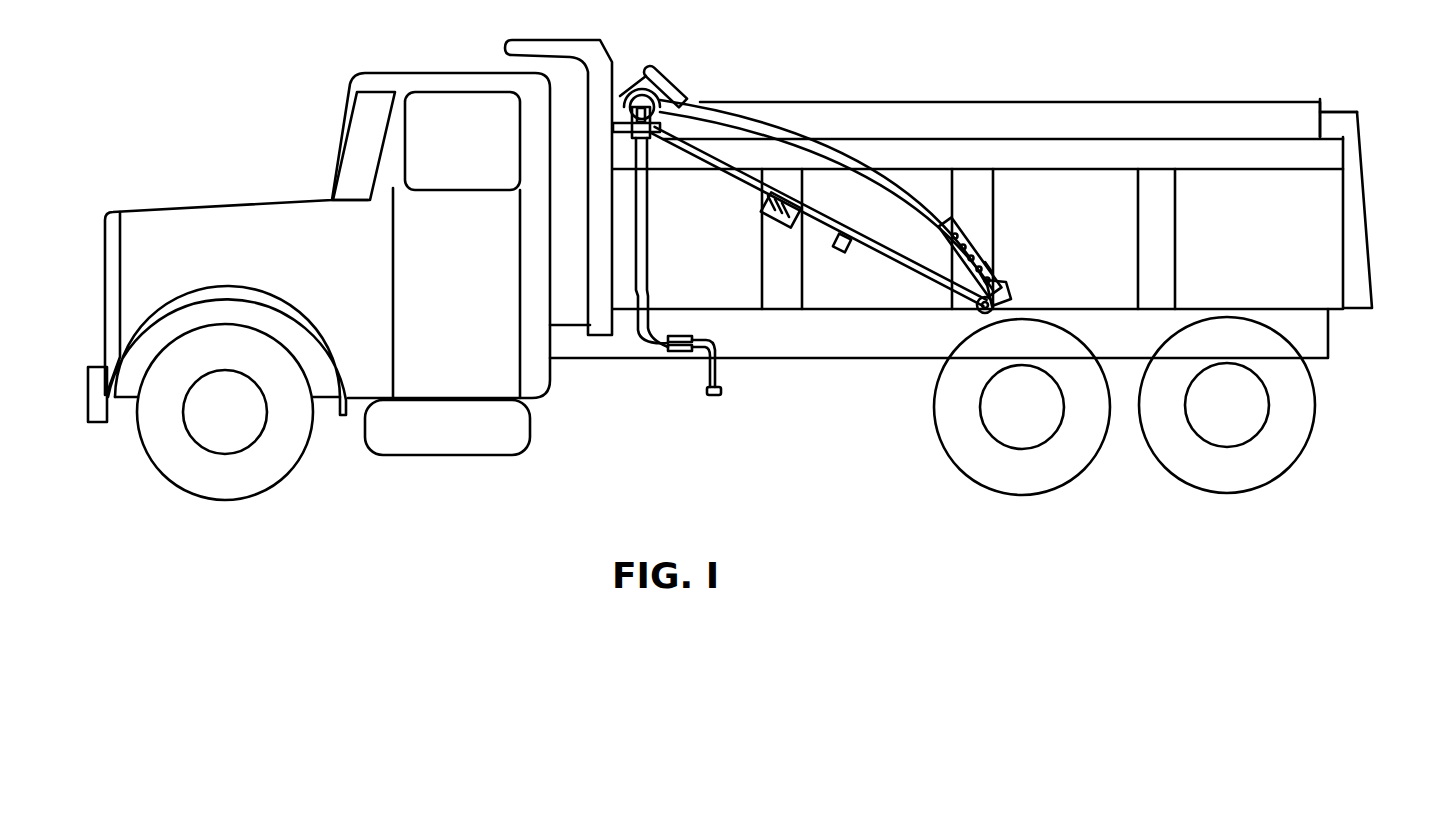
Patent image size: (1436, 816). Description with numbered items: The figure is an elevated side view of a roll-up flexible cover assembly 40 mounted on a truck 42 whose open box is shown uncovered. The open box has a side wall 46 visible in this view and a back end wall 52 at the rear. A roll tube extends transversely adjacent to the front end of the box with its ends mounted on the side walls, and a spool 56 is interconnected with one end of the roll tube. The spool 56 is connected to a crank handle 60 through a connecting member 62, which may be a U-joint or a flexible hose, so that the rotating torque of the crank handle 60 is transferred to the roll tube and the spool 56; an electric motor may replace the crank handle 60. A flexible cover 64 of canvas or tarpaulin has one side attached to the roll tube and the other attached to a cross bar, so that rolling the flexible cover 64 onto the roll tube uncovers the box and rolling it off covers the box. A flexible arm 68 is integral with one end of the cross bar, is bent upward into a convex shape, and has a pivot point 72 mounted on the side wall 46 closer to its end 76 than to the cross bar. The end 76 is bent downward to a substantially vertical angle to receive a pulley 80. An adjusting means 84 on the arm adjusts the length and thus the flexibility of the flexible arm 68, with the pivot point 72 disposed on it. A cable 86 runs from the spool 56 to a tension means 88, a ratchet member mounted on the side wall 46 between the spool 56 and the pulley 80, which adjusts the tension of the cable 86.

The roll-up flexible cover assembly 40 is at (672, 80).
The truck 42 is at (1365, 160).
The side wall 46 is at (1318, 236).
The back end wall 52 is at (1360, 115).
The spool 56 is at (620, 104).
The crank handle 60 is at (650, 196).
The connecting member 62 is at (633, 143).
The flexible cover 64 is at (641, 72).
The flexible arm 68 is at (782, 108).
The pivot point 72 is at (990, 270).
The end of flexible arm 76 is at (1005, 292).
The pulley 80 is at (978, 308).
The adjusting means 84 is at (958, 240).
The cable 86 is at (848, 238).
The tension means 88 is at (772, 222).